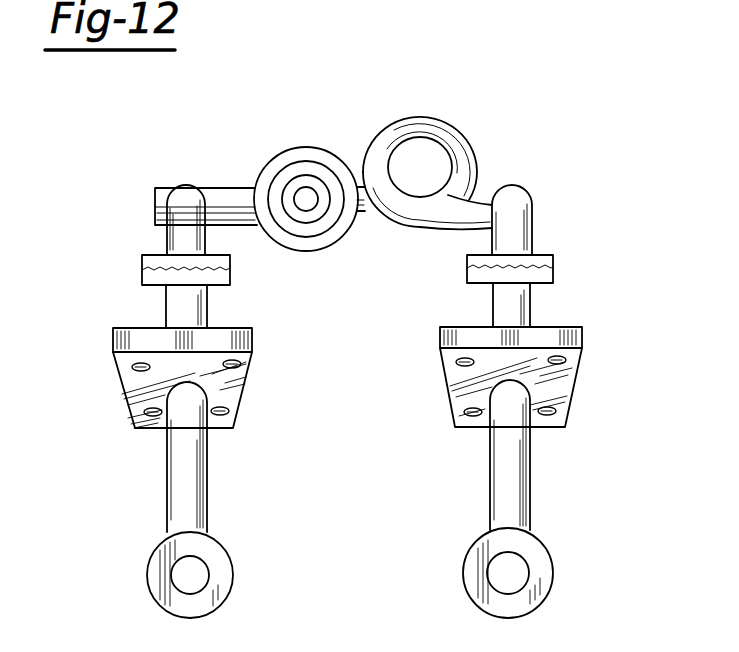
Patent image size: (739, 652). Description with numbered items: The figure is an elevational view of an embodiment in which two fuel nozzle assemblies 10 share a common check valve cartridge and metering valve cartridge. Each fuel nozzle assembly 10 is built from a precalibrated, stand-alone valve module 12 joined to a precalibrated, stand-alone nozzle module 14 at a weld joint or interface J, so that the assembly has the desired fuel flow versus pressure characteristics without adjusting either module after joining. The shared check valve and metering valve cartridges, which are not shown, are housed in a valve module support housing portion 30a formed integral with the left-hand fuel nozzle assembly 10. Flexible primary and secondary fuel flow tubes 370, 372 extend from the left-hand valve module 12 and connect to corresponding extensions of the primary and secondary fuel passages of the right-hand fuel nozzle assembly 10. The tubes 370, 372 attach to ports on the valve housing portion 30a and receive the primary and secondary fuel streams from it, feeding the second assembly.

The fuel nozzle assembly 10 is at (348, 343).
The valve module 12 is at (168, 172).
The nozzle module 14 is at (168, 461).
The weld joint or interface J is at (142, 271).
The valve module support housing portion 30a is at (283, 145).
The primary fuel flow tube 370 is at (496, 157).
The secondary fuel flow tube 372 is at (468, 137).